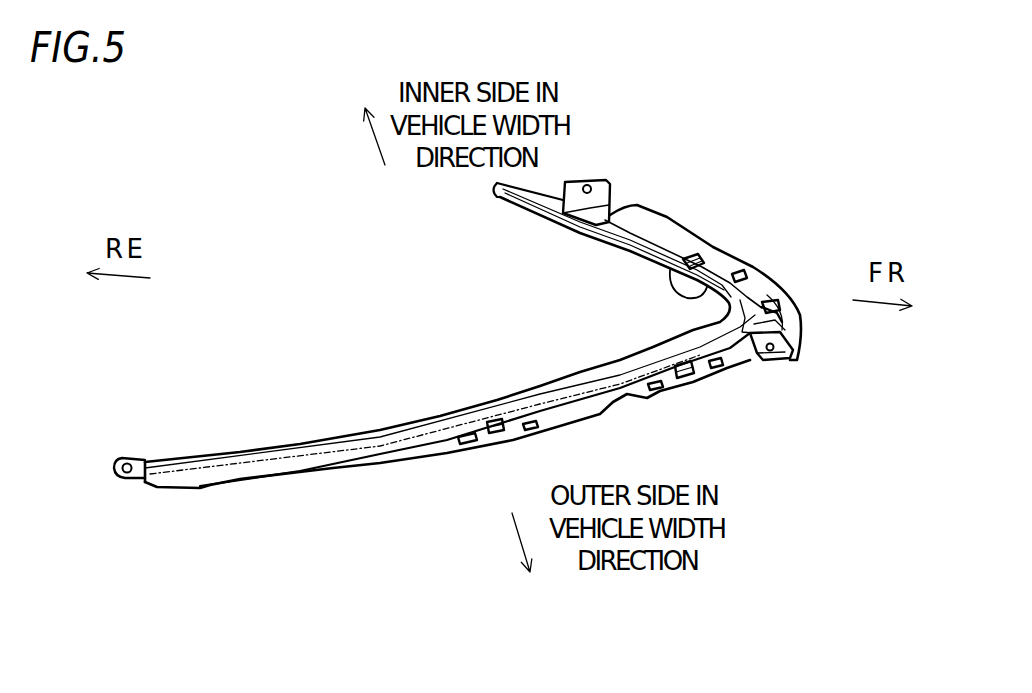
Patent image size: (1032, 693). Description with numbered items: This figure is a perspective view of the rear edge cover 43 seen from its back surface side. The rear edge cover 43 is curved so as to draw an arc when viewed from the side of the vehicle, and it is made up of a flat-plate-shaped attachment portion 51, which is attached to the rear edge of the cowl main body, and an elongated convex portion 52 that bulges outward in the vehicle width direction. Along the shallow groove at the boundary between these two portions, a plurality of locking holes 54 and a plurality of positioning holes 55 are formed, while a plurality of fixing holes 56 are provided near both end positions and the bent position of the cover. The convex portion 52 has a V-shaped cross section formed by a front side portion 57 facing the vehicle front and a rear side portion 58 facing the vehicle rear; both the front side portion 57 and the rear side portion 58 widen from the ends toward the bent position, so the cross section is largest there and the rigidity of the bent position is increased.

The rear edge cover 43 is at (384, 286).
The attachment portion 51 is at (730, 373).
The convex portion 52 is at (783, 183).
The locking holes 54 is at (490, 413).
The positioning holes 55 is at (463, 423).
The fixing holes 56 is at (588, 178).
The front side portion 57 is at (745, 270).
The rear side portion 58 is at (689, 257).